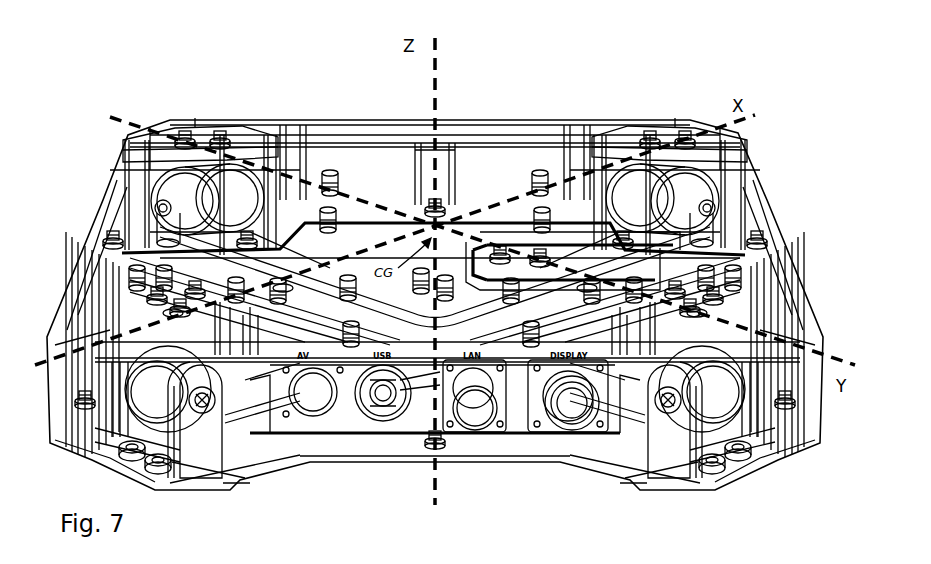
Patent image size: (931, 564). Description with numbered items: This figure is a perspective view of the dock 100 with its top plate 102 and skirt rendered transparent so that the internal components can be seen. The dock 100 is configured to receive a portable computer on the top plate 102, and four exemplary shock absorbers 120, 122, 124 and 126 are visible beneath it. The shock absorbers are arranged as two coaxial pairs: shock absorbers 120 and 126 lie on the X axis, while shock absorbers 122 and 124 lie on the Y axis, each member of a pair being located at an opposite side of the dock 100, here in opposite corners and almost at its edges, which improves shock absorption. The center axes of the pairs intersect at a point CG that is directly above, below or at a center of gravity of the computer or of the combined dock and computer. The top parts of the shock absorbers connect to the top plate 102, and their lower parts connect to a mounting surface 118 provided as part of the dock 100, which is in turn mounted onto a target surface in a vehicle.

The dock 100 is at (522, 52).
The top plate 102 is at (350, 132).
The mounting surface 118 is at (514, 460).
The shock absorber 120 is at (670, 140).
The shock absorber 122 is at (206, 140).
The shock absorber 124 is at (670, 445).
The shock absorber 126 is at (215, 445).